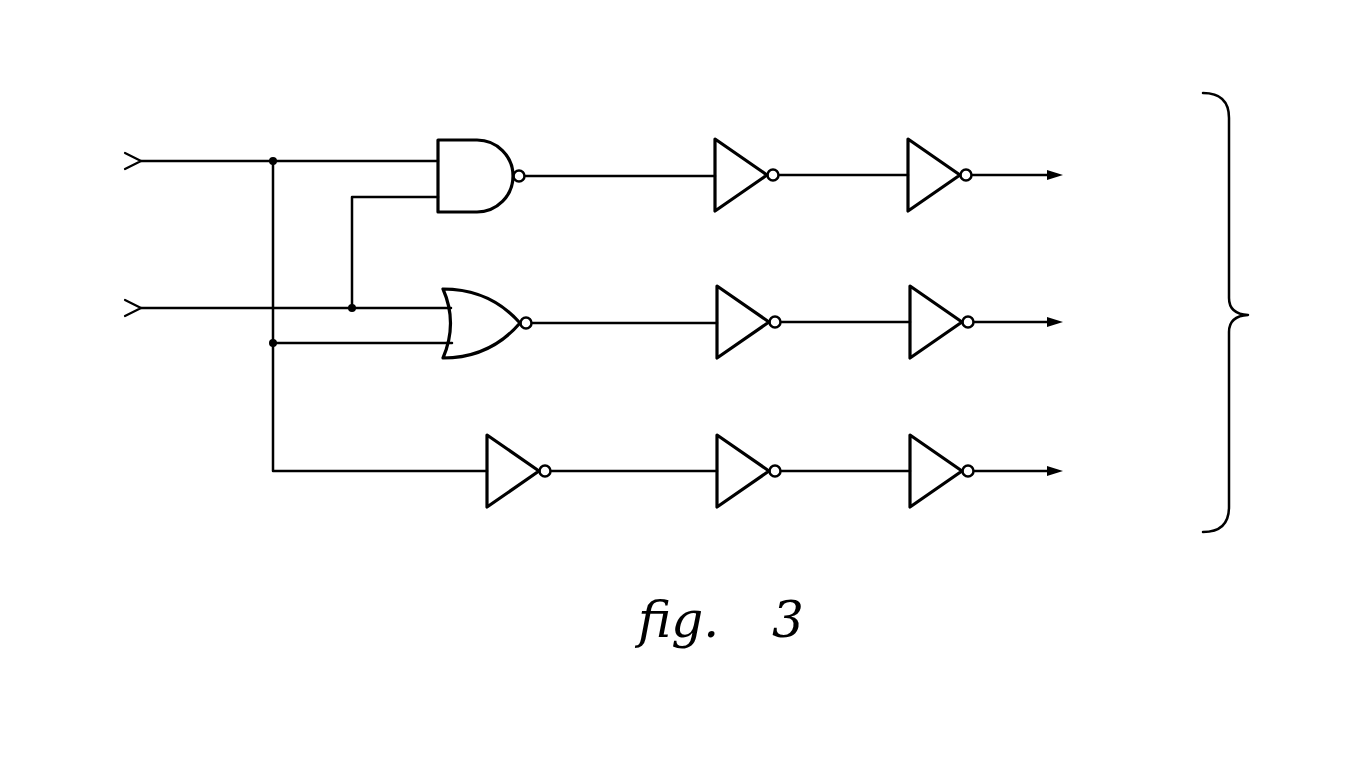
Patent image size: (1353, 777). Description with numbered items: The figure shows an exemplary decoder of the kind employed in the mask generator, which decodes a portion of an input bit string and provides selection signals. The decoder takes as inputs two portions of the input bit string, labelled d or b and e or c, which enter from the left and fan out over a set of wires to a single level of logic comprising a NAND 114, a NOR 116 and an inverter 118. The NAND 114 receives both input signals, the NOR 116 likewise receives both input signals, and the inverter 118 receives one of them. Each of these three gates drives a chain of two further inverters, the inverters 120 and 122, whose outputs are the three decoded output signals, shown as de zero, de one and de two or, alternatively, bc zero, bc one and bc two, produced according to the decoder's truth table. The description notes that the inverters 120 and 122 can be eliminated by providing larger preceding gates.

The NAND 114 is at (477, 142).
The NOR 116 is at (470, 290).
The inverter 118 is at (515, 450).
The inverter 120 is at (738, 126).
The inverter 122 is at (936, 126).